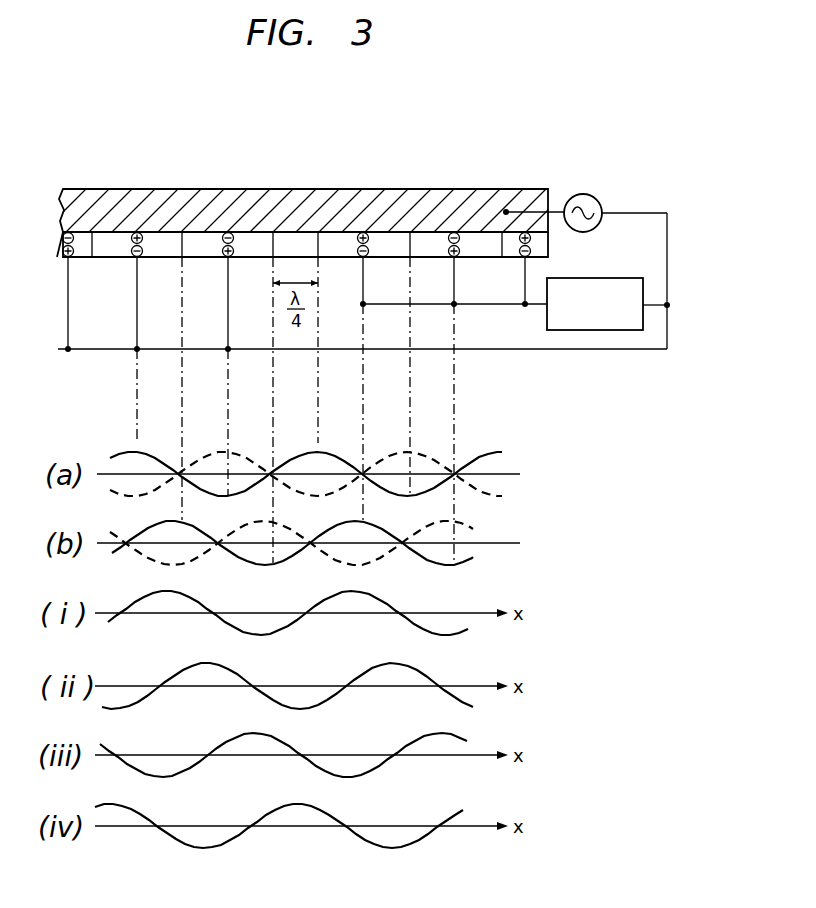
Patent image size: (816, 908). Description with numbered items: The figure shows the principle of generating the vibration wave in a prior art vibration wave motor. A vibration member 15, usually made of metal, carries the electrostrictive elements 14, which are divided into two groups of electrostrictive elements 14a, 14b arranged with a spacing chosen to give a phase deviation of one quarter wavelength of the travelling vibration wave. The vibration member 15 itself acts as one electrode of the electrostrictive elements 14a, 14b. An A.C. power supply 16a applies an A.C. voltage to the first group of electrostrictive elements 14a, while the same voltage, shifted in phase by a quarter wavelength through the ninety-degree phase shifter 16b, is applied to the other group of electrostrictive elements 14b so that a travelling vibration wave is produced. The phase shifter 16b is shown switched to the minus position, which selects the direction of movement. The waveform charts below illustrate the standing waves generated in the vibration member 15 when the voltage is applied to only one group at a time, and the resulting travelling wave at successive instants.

The electrostrictive elements 14 is at (302, 179).
The first group of electrostrictive elements 14a is at (80, 233).
The second group of electrostrictive elements 14b is at (328, 237).
The vibration member 15 is at (353, 193).
The A.C. power supply 16a is at (583, 194).
The 90° phase shifter 16b is at (547, 327).